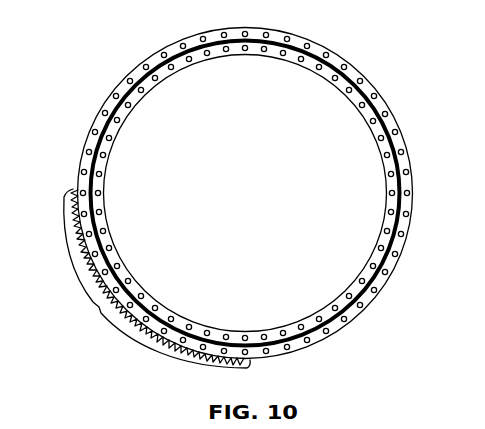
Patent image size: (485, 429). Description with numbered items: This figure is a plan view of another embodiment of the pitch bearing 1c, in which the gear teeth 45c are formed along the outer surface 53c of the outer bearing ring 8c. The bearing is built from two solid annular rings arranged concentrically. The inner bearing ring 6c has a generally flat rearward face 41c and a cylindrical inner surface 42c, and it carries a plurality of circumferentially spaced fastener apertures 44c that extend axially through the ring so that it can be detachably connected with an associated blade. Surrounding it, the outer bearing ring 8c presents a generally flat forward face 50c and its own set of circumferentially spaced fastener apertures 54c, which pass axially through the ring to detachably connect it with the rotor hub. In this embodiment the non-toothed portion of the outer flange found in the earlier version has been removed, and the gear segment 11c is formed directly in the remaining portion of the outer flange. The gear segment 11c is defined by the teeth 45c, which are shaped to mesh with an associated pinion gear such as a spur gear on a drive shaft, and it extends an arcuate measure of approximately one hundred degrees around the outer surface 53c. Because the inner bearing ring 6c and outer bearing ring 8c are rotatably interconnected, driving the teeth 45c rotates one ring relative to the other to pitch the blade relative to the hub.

The pitch bearing 1c is at (134, 51).
The fastener apertures 54c is at (290, 40).
The forward face 50c is at (340, 71).
The rearward face 41c is at (233, 50).
The fastener apertures 44c is at (165, 72).
The inner surface 42c is at (122, 128).
The teeth 45c is at (73, 190).
The gear segment 11c is at (157, 278).
The inner bearing ring 6c is at (211, 332).
The outer surface 53c is at (272, 356).
The outer bearing ring 8c is at (342, 320).